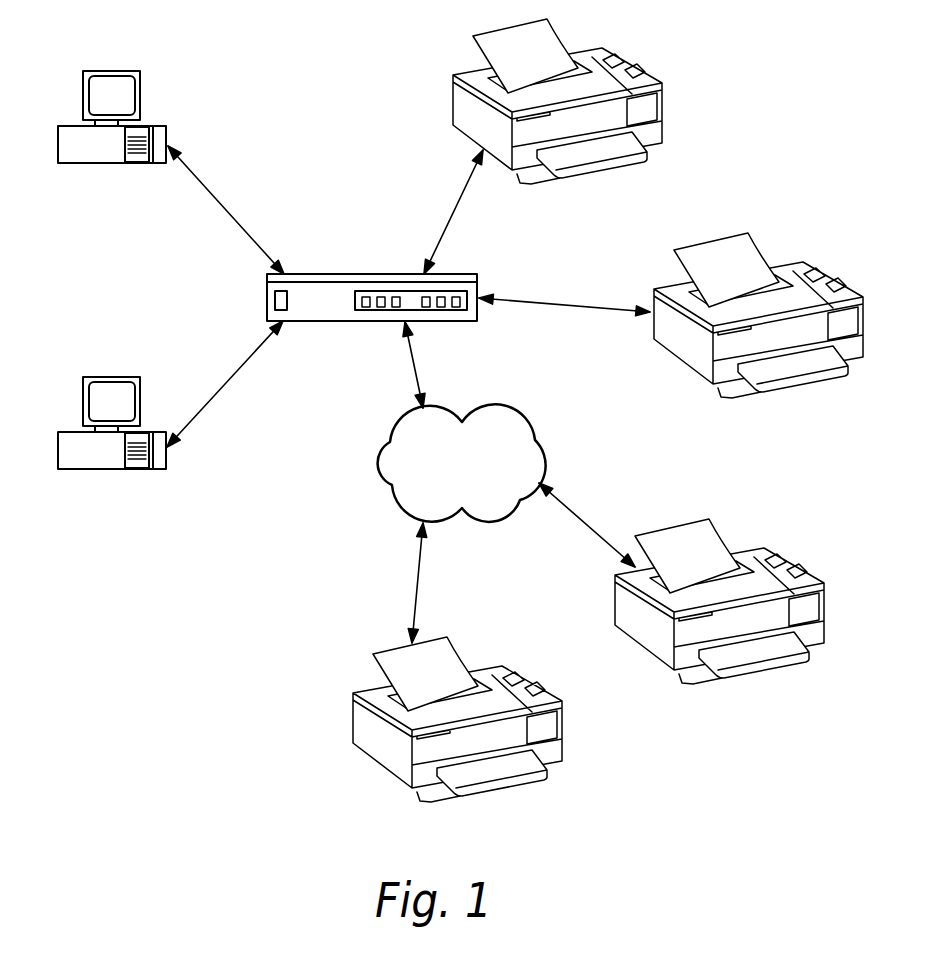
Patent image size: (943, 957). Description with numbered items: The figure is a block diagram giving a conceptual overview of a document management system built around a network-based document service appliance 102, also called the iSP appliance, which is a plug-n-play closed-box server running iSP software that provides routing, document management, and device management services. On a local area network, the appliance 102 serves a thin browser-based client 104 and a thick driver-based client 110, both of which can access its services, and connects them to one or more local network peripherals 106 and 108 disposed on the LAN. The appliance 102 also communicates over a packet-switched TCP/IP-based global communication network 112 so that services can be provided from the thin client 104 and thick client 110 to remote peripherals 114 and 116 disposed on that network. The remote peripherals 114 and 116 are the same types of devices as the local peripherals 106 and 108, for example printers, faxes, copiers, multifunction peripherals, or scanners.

The network-based document service appliance 102 is at (357, 273).
The thin browser-based client 104 is at (117, 71).
The local network peripheral 106 is at (642, 72).
The local network peripheral 108 is at (717, 240).
The thick driver-based client 110 is at (117, 377).
The global communication network 112 is at (380, 465).
The remote peripheral 114 is at (352, 725).
The remote peripheral 116 is at (673, 528).